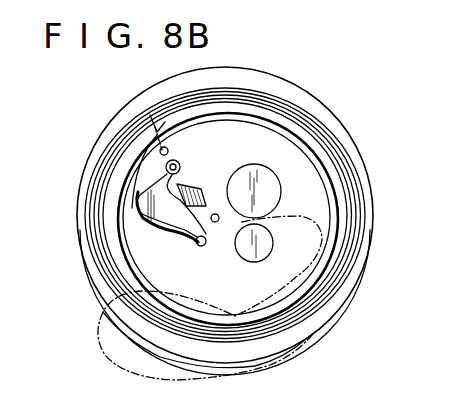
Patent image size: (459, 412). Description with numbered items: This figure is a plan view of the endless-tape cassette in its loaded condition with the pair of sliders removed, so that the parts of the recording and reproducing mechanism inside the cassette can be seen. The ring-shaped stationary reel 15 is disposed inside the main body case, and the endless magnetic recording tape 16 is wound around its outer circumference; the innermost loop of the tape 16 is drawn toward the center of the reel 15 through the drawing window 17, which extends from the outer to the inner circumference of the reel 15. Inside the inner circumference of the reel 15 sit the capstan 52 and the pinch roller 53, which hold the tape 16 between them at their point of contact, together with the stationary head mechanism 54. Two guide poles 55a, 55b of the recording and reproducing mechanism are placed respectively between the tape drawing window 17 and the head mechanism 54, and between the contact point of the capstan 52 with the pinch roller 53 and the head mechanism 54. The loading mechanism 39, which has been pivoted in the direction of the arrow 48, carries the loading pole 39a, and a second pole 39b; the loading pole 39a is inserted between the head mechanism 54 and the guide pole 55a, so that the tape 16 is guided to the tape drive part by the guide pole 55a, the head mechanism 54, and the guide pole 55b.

The stationary reel 15 is at (320, 165).
The endless magnetic recording tape 16 is at (370, 240).
The drawing window 17 is at (152, 125).
The loading mechanism 39 is at (163, 207).
The loading pole 39a is at (180, 167).
The pin 39b is at (200, 247).
The arrow 48 is at (132, 221).
The capstan 52 is at (256, 165).
The pinch roller 53 is at (273, 240).
The stationary head mechanism 54 is at (157, 188).
The guide pole 55a is at (167, 149).
The guide pole 55b is at (215, 223).